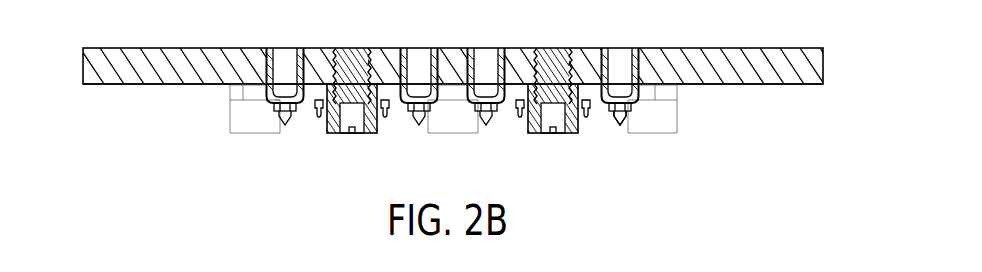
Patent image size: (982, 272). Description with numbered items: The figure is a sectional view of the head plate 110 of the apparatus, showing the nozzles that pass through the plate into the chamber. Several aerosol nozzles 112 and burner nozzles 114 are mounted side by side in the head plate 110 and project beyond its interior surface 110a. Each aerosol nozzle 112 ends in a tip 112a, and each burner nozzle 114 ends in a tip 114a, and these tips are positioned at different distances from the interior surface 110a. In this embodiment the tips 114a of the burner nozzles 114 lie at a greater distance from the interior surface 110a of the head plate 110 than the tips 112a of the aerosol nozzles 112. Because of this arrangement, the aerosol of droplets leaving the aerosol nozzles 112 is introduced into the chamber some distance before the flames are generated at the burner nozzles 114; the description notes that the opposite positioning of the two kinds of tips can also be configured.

The head plate 110 is at (805, 73).
The interior surface of head plate 110a is at (735, 86).
The aerosol nozzle 112 is at (616, 62).
The tip of aerosol nozzle 112a is at (618, 121).
The burner nozzle 114 is at (551, 118).
The tip of burner nozzle 114a is at (532, 135).